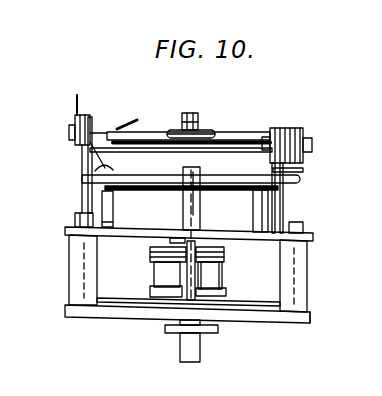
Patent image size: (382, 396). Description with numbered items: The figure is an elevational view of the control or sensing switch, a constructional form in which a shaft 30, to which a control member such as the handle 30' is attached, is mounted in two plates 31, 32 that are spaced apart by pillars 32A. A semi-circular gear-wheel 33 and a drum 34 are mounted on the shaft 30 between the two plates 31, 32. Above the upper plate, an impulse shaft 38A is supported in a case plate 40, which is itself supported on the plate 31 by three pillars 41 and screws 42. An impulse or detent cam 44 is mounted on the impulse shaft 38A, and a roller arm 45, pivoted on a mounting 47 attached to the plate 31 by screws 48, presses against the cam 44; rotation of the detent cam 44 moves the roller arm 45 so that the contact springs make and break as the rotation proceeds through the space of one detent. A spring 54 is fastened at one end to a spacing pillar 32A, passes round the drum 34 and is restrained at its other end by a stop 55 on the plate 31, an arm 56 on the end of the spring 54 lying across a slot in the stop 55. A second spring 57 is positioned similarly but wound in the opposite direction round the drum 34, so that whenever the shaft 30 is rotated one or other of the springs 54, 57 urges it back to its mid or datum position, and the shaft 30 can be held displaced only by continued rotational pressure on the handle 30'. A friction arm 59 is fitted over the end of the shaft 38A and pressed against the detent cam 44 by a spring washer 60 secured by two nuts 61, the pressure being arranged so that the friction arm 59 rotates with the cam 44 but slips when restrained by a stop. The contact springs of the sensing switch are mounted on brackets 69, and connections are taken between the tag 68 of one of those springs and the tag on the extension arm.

The tag 68 is at (80, 108).
The brackets 69 is at (80, 198).
The friction arm 59 is at (140, 133).
The impulse shaft 38A is at (190, 114).
The nuts 61 is at (203, 130).
The spring washer 60 is at (200, 132).
The detent cam 44 is at (292, 128).
The roller arm 45 is at (301, 128).
The mounting 47 is at (302, 171).
The screws 42 is at (113, 169).
The pillars 41 is at (107, 212).
The case plate 40 is at (249, 211).
The screws 48 is at (262, 223).
The shaft 30 is at (206, 233).
The stop 55 is at (182, 236).
The second spring 57 is at (224, 255).
The arm 56 is at (207, 271).
The spring 54 is at (150, 287).
The drum 34 is at (224, 284).
The plate 31 is at (313, 235).
The pillars 32A is at (82, 271).
The semi-circular gear-wheel 33 is at (243, 307).
The plate 32 is at (290, 312).
The handle 30' is at (177, 350).